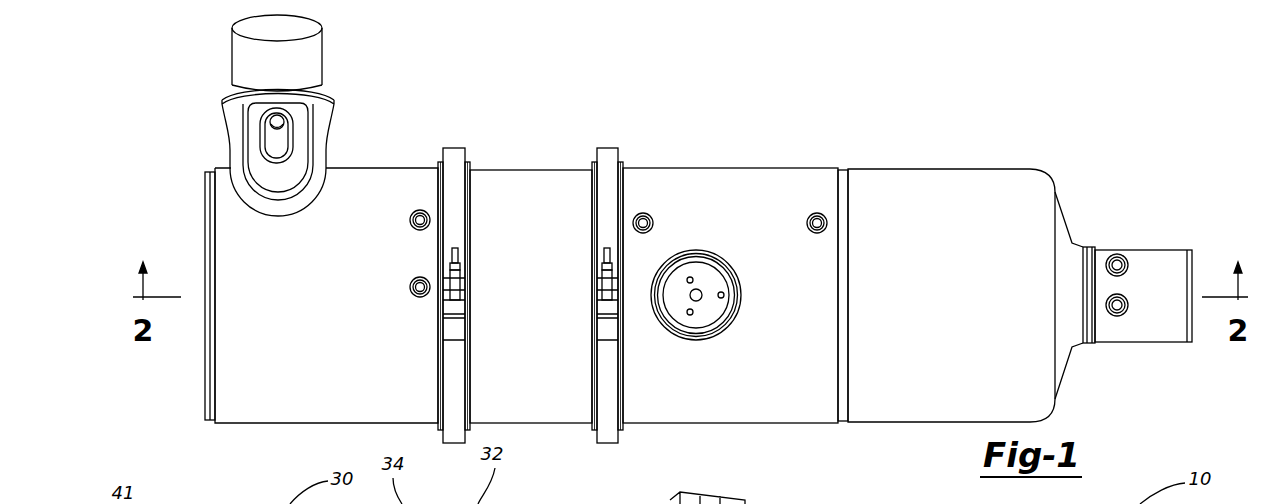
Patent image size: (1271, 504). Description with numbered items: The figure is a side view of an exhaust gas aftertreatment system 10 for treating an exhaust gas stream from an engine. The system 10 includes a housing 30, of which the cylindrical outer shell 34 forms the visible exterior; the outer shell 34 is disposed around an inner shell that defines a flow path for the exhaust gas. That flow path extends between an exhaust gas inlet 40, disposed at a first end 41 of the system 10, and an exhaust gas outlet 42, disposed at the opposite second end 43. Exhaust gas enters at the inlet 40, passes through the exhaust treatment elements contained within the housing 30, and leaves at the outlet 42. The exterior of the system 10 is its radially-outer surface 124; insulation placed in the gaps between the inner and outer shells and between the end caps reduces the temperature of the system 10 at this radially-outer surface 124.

The system 10 is at (1076, 107).
The housing 30 is at (946, 163).
The outer shell 34 is at (356, 185).
The exhaust gas inlet 40 is at (300, 28).
The first end 41 is at (163, 181).
The exhaust gas outlet 42 is at (1192, 262).
The second end 43 is at (1207, 197).
The radially-outer surface 124 is at (368, 168).